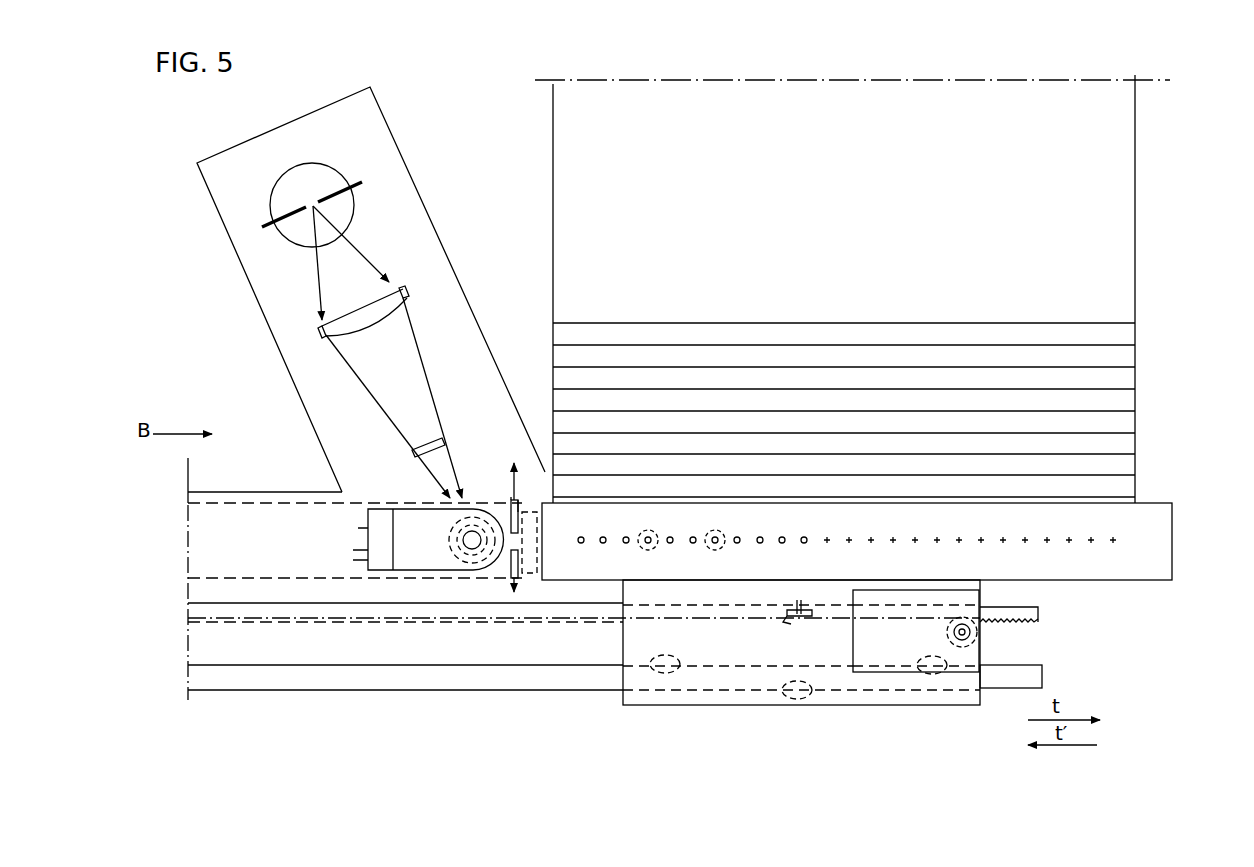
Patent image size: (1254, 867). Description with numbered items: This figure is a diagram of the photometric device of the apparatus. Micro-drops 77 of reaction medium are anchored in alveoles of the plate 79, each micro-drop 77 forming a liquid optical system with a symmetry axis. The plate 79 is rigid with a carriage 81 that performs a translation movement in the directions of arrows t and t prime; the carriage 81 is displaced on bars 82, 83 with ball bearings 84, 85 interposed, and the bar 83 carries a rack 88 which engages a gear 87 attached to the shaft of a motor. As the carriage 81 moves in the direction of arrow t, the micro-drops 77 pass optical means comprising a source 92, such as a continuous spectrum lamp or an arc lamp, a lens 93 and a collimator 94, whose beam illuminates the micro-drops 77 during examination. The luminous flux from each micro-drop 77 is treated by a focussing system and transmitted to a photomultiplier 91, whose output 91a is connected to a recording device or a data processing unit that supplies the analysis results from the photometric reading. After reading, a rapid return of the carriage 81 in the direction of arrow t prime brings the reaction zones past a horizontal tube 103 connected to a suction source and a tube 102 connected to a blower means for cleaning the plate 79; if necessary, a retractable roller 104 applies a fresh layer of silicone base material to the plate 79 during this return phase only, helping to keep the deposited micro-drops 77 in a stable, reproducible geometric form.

The source 92 is at (273, 200).
The lens 93 is at (380, 305).
The collimator 94 is at (443, 441).
The photomultiplier 91 is at (431, 556).
The output 91a is at (366, 521).
The tube 102 is at (510, 578).
The horizontal tube 103 is at (511, 497).
The retractable roller 104 is at (528, 518).
The plate 79 is at (1150, 537).
The micro-drop 77 is at (760, 541).
The rack 88 is at (568, 622).
The ball bearings 85 is at (668, 673).
The ball bearings 84 is at (788, 622).
The carriage 81 is at (975, 655).
The gear 87 is at (950, 640).
The bar 83 is at (1038, 610).
The bar 82 is at (1042, 677).